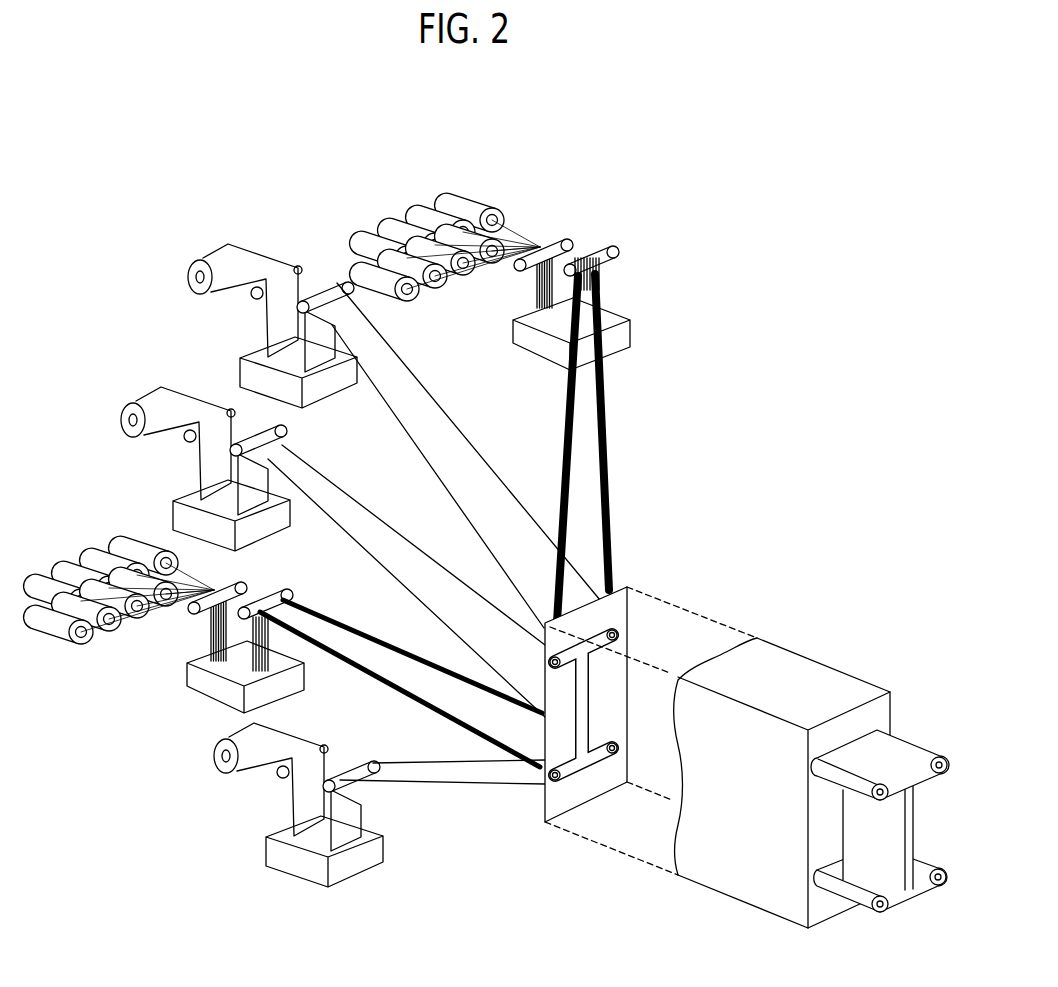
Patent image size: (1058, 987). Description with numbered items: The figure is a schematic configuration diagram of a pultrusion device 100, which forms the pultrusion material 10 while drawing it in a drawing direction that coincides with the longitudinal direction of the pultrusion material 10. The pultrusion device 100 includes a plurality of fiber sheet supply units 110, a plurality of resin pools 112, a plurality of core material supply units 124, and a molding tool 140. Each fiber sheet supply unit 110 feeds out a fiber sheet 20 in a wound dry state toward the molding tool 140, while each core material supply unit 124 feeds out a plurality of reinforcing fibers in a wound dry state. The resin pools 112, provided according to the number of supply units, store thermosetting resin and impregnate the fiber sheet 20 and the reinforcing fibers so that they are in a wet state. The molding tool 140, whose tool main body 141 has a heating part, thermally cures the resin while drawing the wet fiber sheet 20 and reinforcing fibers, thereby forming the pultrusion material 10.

The pultrusion device 100 is at (693, 142).
The fiber sheet supply unit 110 is at (208, 238).
The resin pool 112 is at (318, 398).
The core material supply unit 124 is at (424, 191).
The fiber sheet 20 is at (422, 458).
The molding tool 140 is at (810, 646).
The tool main body 141 is at (735, 880).
The pultrusion material 10 is at (918, 740).